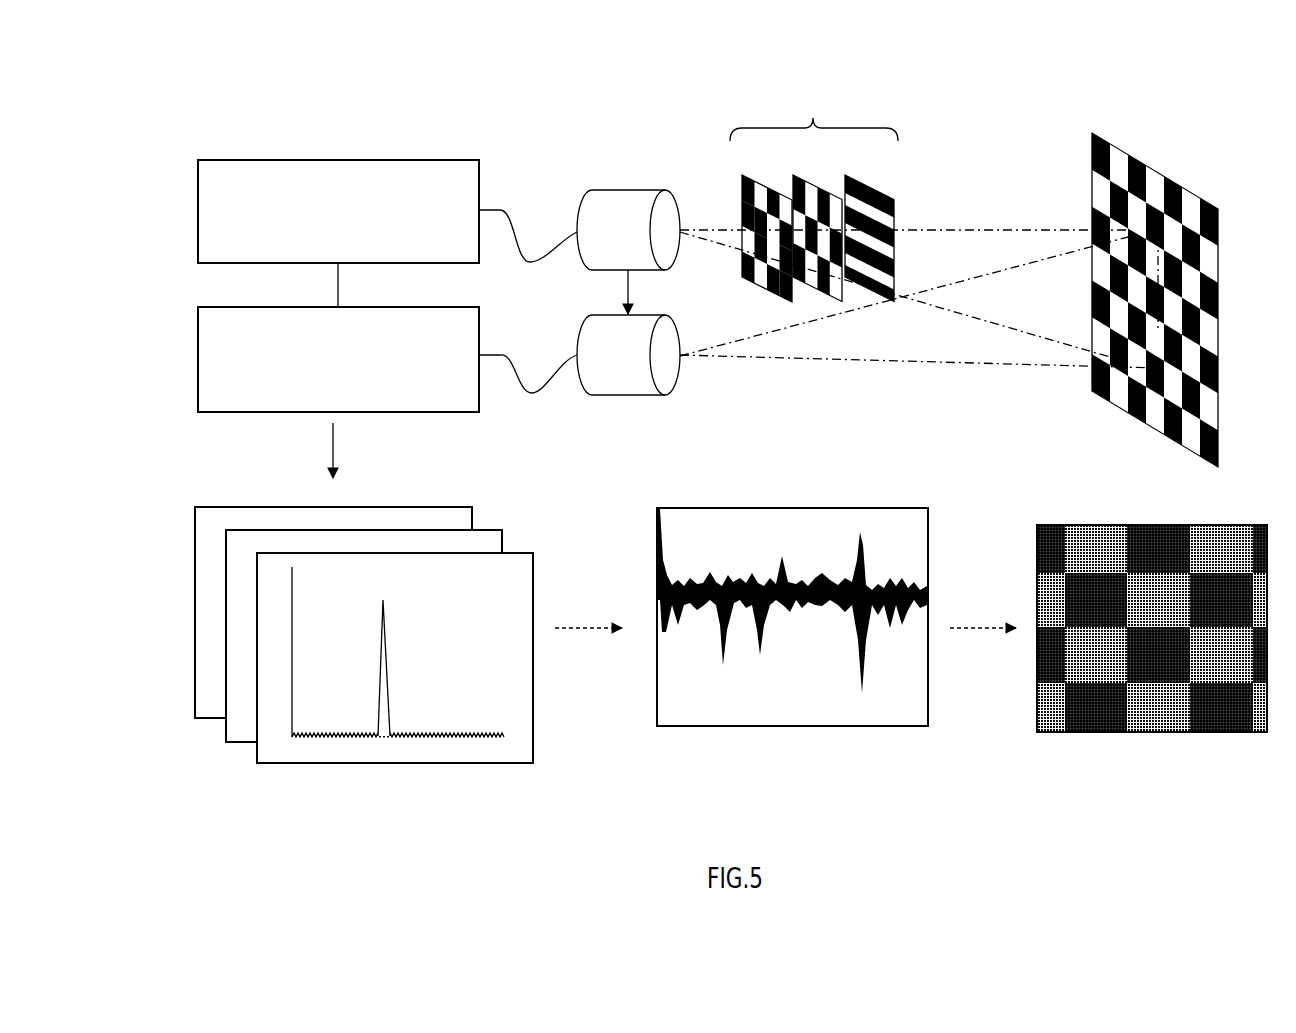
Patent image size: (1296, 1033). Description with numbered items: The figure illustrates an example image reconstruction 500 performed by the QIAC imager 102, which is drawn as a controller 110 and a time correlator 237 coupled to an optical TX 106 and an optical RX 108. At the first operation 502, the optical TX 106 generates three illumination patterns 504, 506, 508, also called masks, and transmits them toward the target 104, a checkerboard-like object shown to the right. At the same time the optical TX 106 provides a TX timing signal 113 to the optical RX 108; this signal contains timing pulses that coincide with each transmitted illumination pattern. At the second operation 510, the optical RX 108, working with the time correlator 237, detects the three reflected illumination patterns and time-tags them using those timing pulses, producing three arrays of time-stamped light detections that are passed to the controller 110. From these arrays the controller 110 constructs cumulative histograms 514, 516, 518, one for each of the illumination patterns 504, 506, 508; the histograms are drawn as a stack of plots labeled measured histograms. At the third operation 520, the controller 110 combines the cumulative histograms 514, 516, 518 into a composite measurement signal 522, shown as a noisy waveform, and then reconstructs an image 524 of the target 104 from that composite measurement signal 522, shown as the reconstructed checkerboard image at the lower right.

The image reconstruction 500 is at (985, 56).
The QIAC imager 102 is at (175, 160).
The controller 110 is at (420, 160).
The time correlator 237 is at (422, 412).
The optical TX 106 is at (625, 190).
The TX timing signal 113 is at (626, 283).
The optical RX 108 is at (627, 395).
The illumination pattern generation operation 502 is at (760, 77).
The illumination pattern 504 is at (757, 183).
The illumination pattern 506 is at (810, 187).
The illumination pattern 508 is at (882, 196).
The target 104 is at (1186, 174).
The detection and histogram construction operation 510 is at (155, 581).
The cumulative histogram 514 is at (403, 507).
The cumulative histogram 516 is at (483, 530).
The cumulative histogram 518 is at (522, 553).
The combining and reconstruction operation 520 is at (934, 790).
The composite measurement signal 522 is at (866, 508).
The image 524 is at (1222, 525).